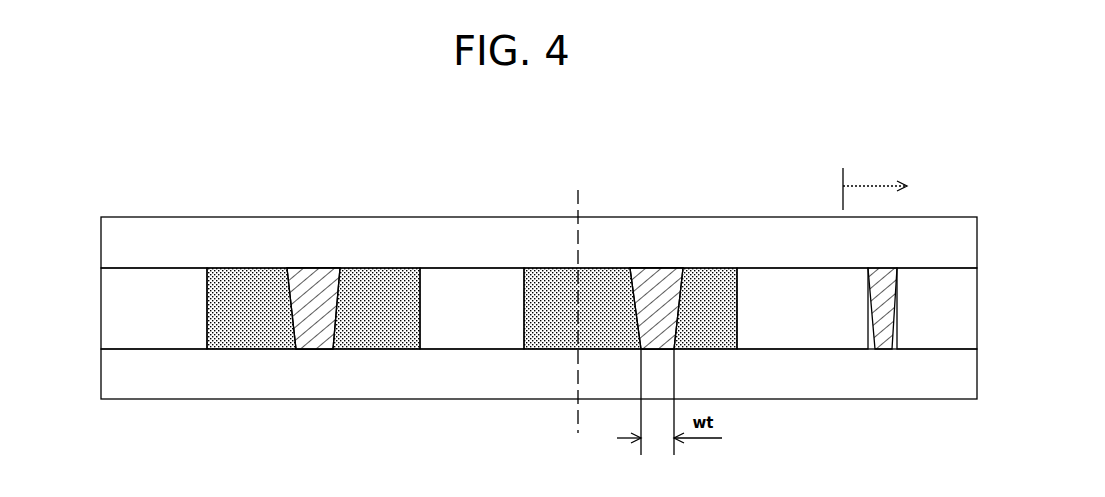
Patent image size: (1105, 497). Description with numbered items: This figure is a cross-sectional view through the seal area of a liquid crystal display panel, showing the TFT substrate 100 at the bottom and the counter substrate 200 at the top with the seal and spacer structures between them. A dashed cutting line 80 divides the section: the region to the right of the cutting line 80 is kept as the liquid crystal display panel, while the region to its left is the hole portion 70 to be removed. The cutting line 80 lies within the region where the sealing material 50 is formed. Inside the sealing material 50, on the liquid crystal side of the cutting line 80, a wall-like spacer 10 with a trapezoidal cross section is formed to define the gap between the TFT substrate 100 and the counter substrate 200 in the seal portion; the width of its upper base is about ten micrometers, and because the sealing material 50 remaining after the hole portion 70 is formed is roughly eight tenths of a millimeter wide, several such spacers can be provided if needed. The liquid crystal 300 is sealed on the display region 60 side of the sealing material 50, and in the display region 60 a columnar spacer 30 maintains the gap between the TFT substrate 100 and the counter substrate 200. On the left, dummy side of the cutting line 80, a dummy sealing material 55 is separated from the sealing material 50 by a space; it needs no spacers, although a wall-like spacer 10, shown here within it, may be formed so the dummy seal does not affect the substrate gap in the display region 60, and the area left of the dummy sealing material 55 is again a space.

The wall-like spacer 10 is at (343, 297).
The columnar spacer 30 is at (885, 313).
The sealing material 50 is at (709, 292).
The dummy sealing material 55 is at (257, 288).
The display region 60 is at (875, 184).
The hole portion 70 is at (142, 287).
The cutting line 80 is at (578, 208).
The TFT substrate 100 is at (968, 375).
The counter substrate 200 is at (968, 240).
The liquid crystal 300 is at (857, 308).